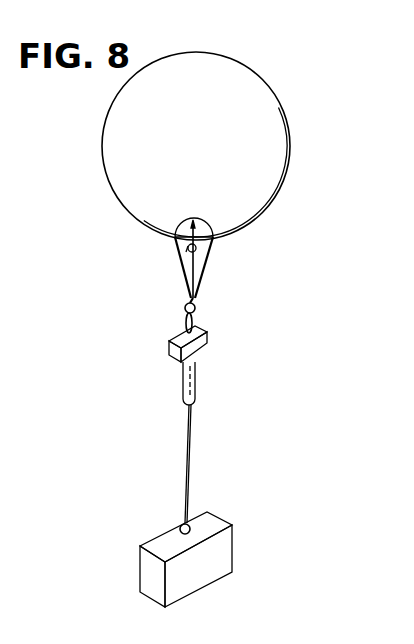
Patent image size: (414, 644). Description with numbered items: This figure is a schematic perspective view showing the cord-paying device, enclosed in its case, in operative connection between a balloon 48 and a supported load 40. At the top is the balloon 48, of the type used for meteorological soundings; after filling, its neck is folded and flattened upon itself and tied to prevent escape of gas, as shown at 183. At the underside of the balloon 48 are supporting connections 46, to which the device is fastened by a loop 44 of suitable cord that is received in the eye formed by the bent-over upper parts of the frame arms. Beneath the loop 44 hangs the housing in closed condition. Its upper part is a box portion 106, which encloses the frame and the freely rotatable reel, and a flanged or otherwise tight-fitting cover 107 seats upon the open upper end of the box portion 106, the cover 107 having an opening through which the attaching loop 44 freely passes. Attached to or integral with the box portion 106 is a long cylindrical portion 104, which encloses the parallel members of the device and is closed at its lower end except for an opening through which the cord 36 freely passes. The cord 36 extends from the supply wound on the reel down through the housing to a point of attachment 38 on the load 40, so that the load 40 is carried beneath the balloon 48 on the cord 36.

The balloon 48 is at (283, 148).
The tied balloon neck 183 is at (203, 247).
The supporting connections 46 is at (178, 267).
The loop 44 is at (197, 318).
The cover 107 is at (182, 335).
The box portion 106 is at (208, 338).
The cylindrical portion 104 is at (197, 380).
The cord 36 is at (190, 458).
The point of attachment 38 is at (180, 526).
The load 40 is at (142, 577).